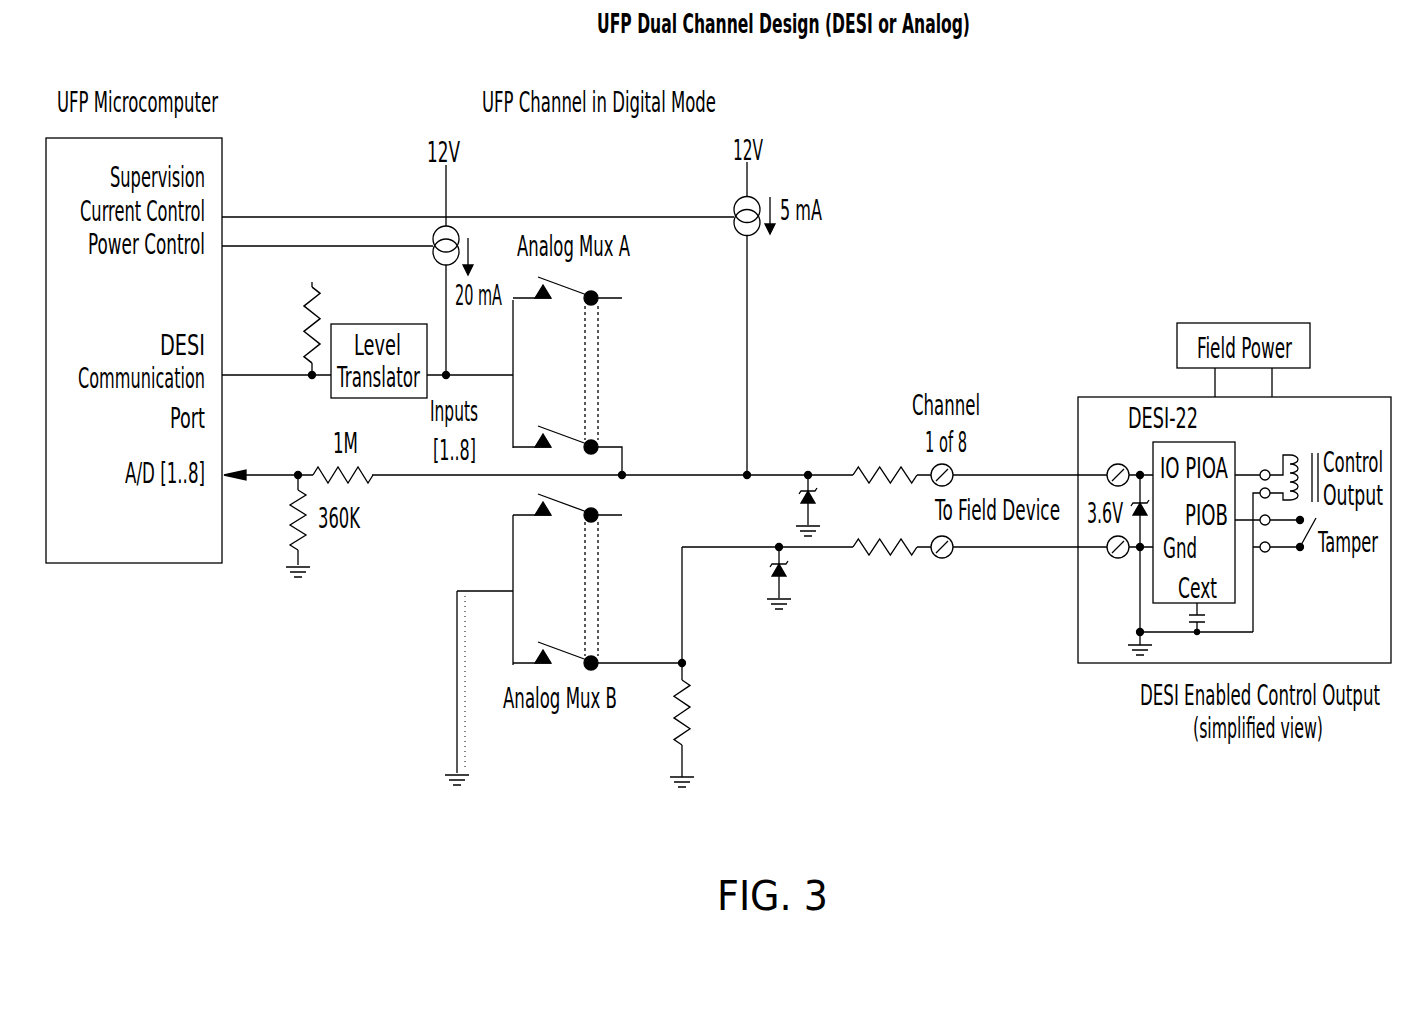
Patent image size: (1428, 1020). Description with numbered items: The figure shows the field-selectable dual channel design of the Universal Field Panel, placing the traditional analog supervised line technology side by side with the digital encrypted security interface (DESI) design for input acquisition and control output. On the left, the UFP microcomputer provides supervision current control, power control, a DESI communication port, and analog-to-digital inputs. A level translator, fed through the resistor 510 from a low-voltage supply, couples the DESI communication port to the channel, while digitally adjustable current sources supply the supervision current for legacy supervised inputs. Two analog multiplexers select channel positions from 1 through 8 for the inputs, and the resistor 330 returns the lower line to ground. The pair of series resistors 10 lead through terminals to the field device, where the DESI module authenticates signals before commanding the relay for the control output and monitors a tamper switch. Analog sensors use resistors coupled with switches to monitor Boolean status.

The pull-up resistor (510 ohm) 510 is at (293, 313).
The resistor (330 ohm) 330 is at (701, 712).
The series resistor (10 ohm) 10 is at (885, 490).
The analog mux channel 8 is at (562, 395).
The analog mux channel 1 is at (562, 539).